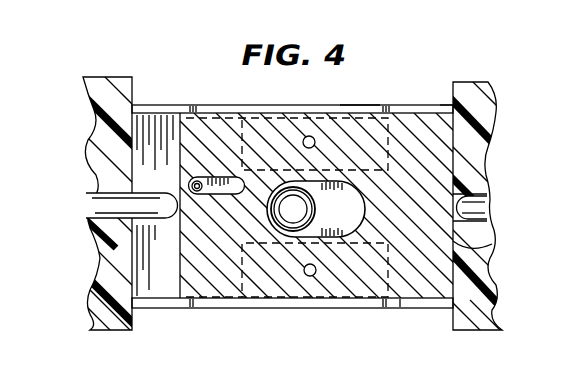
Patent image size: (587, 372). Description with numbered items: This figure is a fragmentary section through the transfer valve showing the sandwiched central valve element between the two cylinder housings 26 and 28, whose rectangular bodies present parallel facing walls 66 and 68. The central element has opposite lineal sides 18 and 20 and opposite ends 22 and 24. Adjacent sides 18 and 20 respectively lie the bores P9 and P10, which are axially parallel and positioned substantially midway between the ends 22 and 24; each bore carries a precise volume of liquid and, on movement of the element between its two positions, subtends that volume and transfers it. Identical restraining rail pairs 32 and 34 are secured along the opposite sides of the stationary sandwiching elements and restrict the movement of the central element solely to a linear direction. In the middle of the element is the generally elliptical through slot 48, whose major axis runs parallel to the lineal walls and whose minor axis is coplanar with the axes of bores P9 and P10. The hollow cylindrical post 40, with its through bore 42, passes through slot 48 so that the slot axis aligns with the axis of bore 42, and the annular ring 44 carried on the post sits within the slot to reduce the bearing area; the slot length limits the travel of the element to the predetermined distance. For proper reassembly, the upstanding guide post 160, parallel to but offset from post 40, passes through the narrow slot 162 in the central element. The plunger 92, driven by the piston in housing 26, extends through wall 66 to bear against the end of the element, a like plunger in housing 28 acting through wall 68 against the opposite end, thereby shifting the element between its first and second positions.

The cylinder housing 26 is at (104, 77).
The cylinder housing 28 is at (468, 82).
The facing wall 66 is at (136, 100).
The facing wall 68 is at (453, 92).
The lineal side 18 is at (362, 86).
The restraining rail pair 32 is at (376, 110).
The end 22 is at (292, 303).
The lineal side 20 is at (378, 323).
The restraining rail pair 34 is at (402, 308).
The upstanding post 160 is at (158, 205).
The narrow slot 162 is at (157, 260).
The through slot 48 is at (385, 223).
The bore P9 is at (312, 136).
The bore P10 is at (311, 276).
The through bore 42 is at (272, 200).
The hollow cylindrical post 40 is at (316, 201).
The annular ring 44 is at (318, 220).
The plunger 92 is at (86, 195).
The end 24 is at (498, 221).